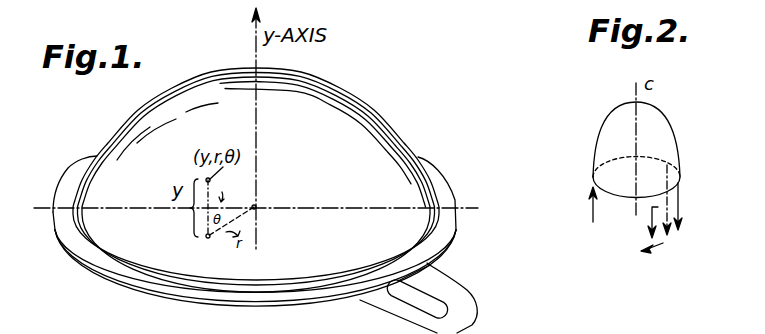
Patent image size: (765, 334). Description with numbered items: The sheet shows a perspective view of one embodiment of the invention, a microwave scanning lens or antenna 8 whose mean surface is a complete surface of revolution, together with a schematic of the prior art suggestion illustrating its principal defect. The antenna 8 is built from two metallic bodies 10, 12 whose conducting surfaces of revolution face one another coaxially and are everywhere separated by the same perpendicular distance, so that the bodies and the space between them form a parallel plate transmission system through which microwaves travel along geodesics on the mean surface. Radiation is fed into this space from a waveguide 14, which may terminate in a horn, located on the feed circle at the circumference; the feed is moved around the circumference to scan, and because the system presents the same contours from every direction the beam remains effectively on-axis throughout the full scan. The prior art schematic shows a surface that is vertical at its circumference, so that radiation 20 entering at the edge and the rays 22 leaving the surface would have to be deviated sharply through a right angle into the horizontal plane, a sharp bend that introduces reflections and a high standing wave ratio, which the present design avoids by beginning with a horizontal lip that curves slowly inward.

In FIG. 1, the surface of revolution lens or antenna 8 is at (206, 66).
In FIG. 1, the metallic body 10 is at (132, 135).
In FIG. 1, the metallic body 12 is at (65, 257).
In FIG. 1, the waveguide 14 is at (478, 323).
In FIG. 2, the incident ray 20 is at (593, 222).
In FIG. 2, the emergent rays 22 is at (672, 212).